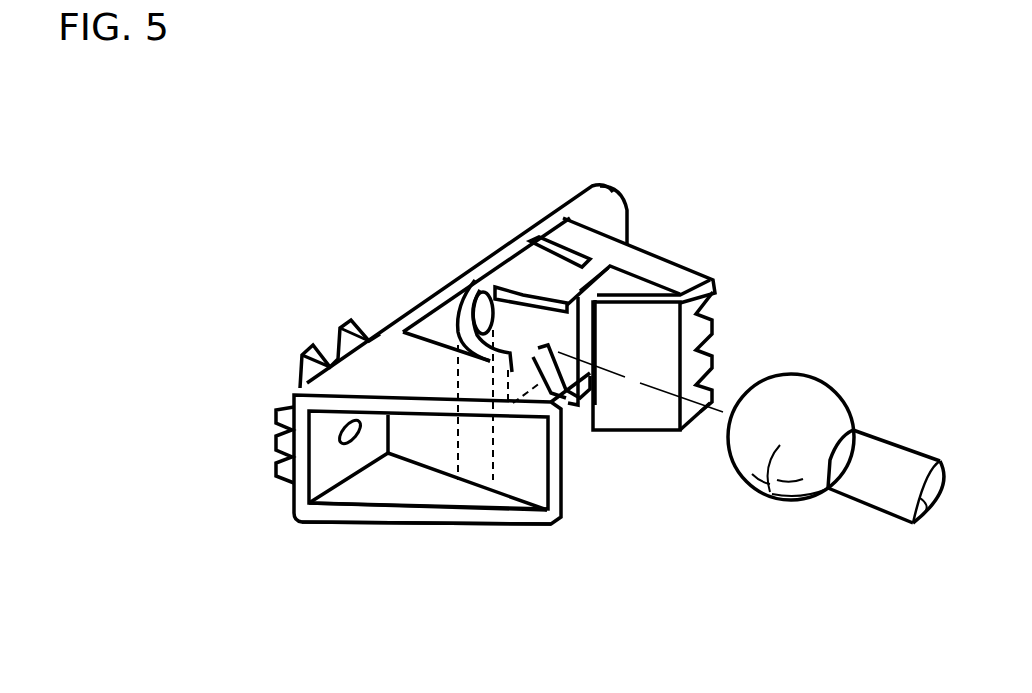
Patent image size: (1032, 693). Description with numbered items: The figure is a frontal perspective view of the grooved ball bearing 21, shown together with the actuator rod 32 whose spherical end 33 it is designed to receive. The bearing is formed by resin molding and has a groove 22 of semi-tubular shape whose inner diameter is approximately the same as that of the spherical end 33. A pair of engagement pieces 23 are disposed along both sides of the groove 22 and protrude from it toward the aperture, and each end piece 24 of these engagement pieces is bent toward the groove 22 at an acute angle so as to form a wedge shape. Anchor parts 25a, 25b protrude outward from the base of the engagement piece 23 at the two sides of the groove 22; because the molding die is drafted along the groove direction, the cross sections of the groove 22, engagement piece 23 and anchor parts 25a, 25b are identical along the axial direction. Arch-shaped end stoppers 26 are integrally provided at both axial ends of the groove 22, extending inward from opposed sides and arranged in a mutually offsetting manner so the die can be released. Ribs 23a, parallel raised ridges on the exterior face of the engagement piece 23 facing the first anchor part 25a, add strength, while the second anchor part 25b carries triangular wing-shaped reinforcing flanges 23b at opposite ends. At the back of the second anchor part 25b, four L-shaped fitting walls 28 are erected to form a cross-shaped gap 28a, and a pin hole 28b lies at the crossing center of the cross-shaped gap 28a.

The grooved ball bearing 21 is at (533, 203).
The groove 22 is at (467, 285).
The engagement piece 23 is at (643, 250).
The ribs 23a is at (713, 312).
The reinforcing flanges 23b is at (427, 383).
The end piece 24 is at (642, 332).
The first anchor part 25a is at (620, 192).
The second anchor part 25b is at (300, 526).
The end stoppers 26 is at (530, 273).
The L-shaped fitting walls 28 is at (303, 368).
The cross-shaped gap 28a is at (279, 443).
The pin hole 28b is at (353, 433).
The actuator rod 32 is at (863, 477).
The spherical end 33 is at (780, 445).